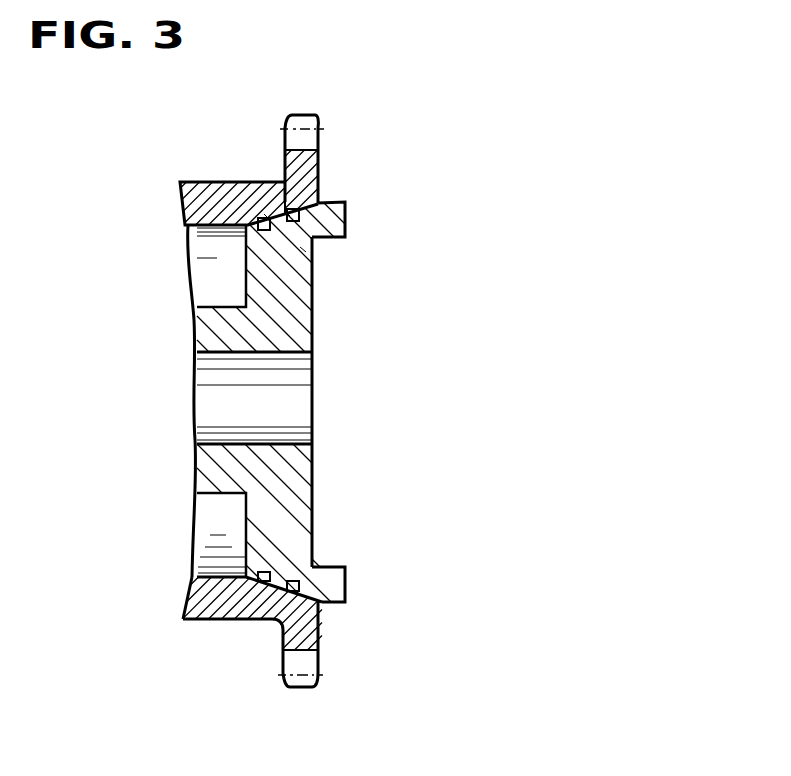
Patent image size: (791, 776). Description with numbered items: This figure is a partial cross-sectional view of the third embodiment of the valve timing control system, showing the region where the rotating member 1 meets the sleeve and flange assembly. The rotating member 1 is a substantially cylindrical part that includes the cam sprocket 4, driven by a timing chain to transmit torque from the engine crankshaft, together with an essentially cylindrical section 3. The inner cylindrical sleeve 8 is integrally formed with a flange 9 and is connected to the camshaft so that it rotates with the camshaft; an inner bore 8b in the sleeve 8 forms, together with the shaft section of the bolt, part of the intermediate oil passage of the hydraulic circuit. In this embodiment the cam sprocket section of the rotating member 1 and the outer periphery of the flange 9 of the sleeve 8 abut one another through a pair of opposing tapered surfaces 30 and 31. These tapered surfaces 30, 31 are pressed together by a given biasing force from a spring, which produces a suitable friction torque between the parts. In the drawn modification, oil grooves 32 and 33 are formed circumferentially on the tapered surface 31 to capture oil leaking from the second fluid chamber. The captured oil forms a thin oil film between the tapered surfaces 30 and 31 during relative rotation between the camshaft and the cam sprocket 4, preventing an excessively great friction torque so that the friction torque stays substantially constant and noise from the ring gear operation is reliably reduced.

The rotating member 1 is at (190, 176).
The cylindrical section 3 is at (183, 203).
The cam sprocket 4 is at (320, 132).
The inner cylindrical sleeve 8 is at (213, 497).
The inner bore 8b is at (282, 442).
The flange 9 is at (302, 320).
The tapered surface 30 is at (288, 210).
The tapered surface 31 is at (303, 250).
The oil groove 32 is at (268, 213).
The oil groove 33 is at (299, 215).